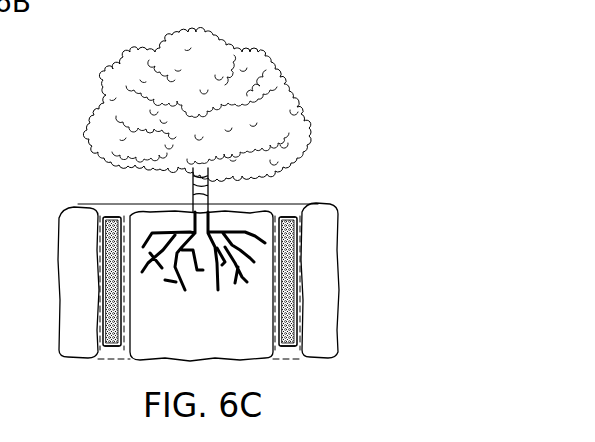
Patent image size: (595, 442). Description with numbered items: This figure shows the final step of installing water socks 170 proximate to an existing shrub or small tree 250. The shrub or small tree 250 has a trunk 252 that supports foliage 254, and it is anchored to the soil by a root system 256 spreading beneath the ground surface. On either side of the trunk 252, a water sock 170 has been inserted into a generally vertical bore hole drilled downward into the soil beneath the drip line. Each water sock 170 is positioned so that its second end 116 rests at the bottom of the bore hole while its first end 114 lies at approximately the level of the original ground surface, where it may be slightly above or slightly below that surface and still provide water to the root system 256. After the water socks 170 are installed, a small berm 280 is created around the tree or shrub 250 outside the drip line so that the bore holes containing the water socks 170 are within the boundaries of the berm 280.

The shrub or small tree 250 is at (222, 145).
The foliage 254 is at (293, 108).
The trunk 252 is at (212, 211).
The root system 256 is at (188, 223).
The first end of the water sock 114 is at (118, 215).
The second end of the water sock 116 is at (102, 347).
The water sock 170 is at (107, 205).
The berm 280 is at (77, 209).